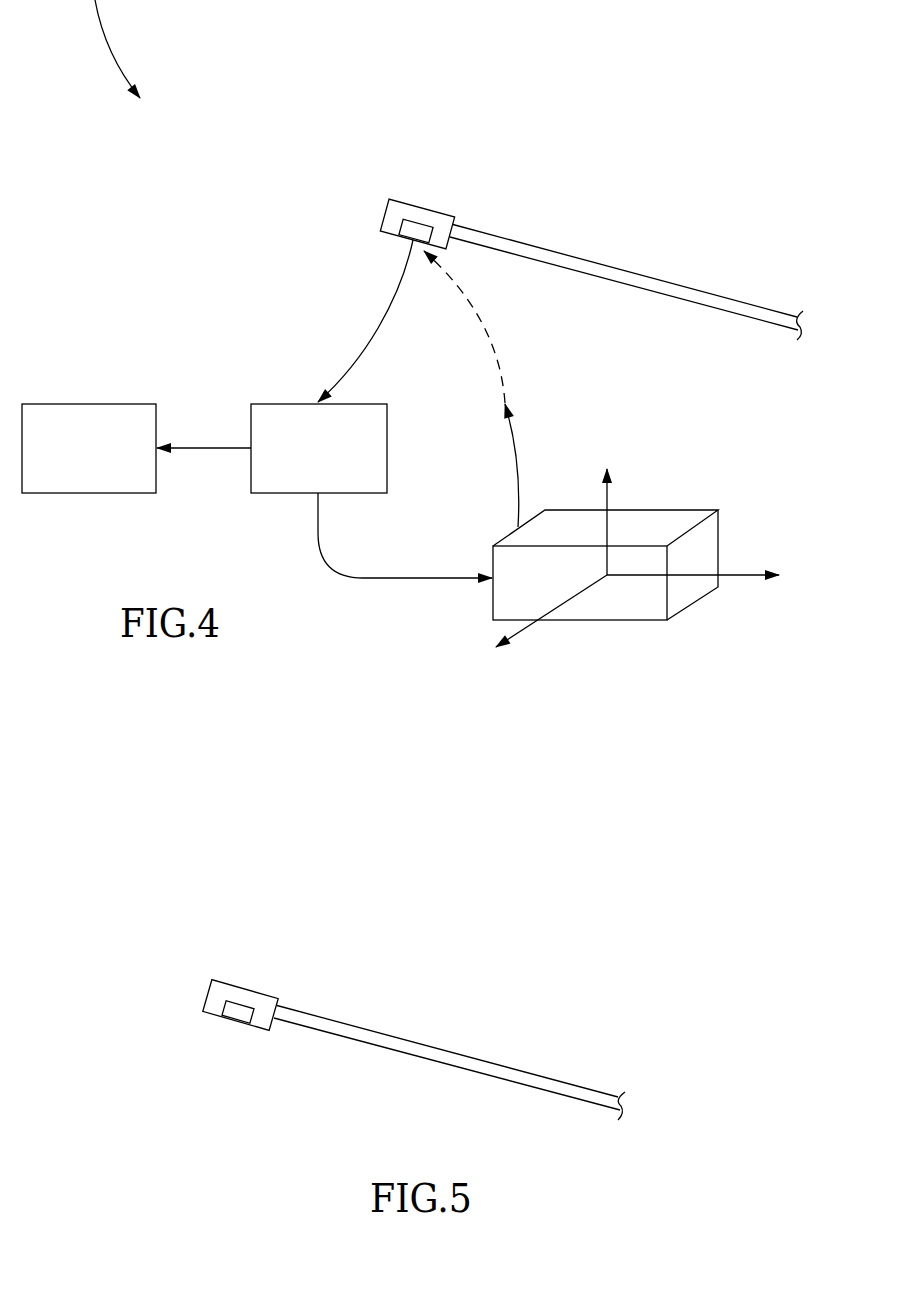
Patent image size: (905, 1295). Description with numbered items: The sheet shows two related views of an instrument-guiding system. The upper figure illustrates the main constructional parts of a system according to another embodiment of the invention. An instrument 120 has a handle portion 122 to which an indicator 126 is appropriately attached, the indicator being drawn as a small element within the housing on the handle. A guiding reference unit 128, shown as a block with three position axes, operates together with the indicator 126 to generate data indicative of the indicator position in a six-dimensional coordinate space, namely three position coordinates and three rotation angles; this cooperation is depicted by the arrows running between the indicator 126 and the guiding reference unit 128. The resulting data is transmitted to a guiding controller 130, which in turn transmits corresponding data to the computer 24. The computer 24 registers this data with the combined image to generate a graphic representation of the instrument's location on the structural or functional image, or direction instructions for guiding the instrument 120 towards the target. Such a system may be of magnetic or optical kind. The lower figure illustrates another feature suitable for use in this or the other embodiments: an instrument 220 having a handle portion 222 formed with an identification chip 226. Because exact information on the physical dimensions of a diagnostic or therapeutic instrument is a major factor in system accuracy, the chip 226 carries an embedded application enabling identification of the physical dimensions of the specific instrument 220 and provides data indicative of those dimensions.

In FIG. 4, the computer 24 is at (68, 403).
In FIG. 4, the instrument 120 is at (576, 257).
In FIG. 4, the handle portion 122 is at (419, 206).
In FIG. 4, the indicator 126 is at (402, 228).
In FIG. 4, the guiding reference unit 128 is at (663, 512).
In FIG. 4, the guiding controller 130 is at (285, 403).
In FIG. 5, the instrument 220 is at (157, 938).
In FIG. 5, the handle portion 222 is at (247, 987).
In FIG. 5, the identification chip 226 is at (224, 1005).